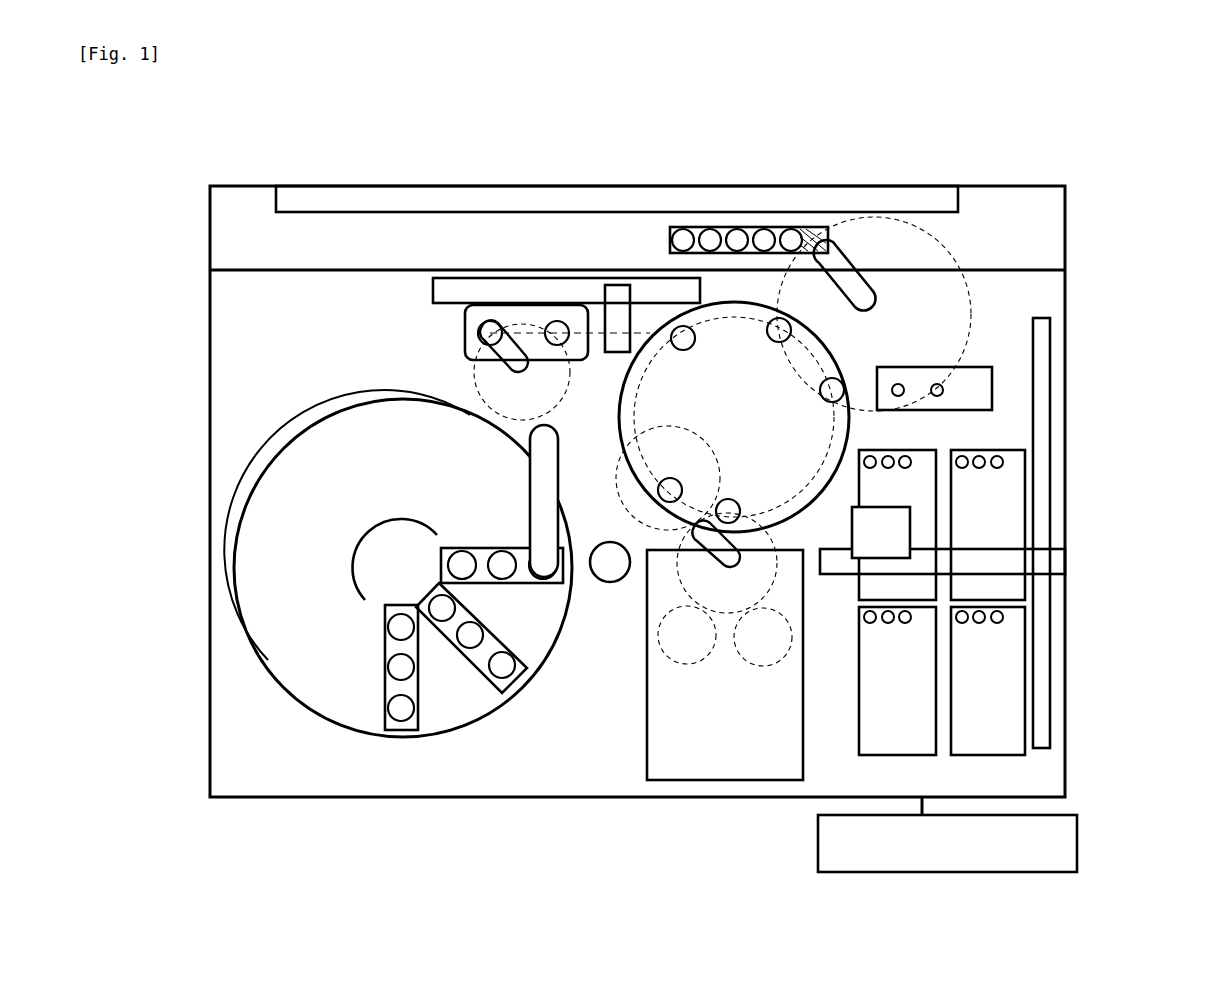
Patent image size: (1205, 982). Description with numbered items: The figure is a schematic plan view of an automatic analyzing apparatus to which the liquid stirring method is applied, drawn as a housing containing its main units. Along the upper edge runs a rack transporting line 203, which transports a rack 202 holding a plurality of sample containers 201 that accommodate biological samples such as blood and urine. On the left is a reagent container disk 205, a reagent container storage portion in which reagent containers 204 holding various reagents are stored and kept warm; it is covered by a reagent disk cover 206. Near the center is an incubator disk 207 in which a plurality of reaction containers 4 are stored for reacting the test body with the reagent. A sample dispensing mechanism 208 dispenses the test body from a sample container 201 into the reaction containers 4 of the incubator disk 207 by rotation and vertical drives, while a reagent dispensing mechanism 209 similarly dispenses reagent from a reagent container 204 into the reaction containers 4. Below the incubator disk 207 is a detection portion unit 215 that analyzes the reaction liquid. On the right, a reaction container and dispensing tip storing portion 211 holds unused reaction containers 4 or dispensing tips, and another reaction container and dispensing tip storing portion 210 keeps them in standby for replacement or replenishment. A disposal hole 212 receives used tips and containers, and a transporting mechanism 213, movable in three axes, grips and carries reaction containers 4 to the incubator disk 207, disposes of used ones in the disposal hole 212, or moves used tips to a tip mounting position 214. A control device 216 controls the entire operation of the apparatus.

The reaction container 4 is at (848, 373).
The sample container 201 is at (787, 223).
The rack 202 is at (720, 223).
The rack transporting line 203 is at (497, 240).
The reagent container 204 is at (413, 730).
The reagent container disk 205 is at (348, 698).
The reagent disk cover 206 is at (273, 550).
The incubator disk 207 is at (871, 337).
The sample dispensing mechanism 208 is at (837, 263).
The reagent dispensing mechanism 209 is at (548, 565).
The reaction container and dispensing tip storing portion 210 is at (963, 670).
The reaction container and dispensing tip storing portion 211 is at (970, 490).
The disposal hole 212 is at (937, 390).
The transporting mechanism 213 is at (888, 548).
The tip mounting position 214 is at (1017, 352).
The detection portion unit 215 is at (712, 715).
The control device 216 is at (1070, 842).